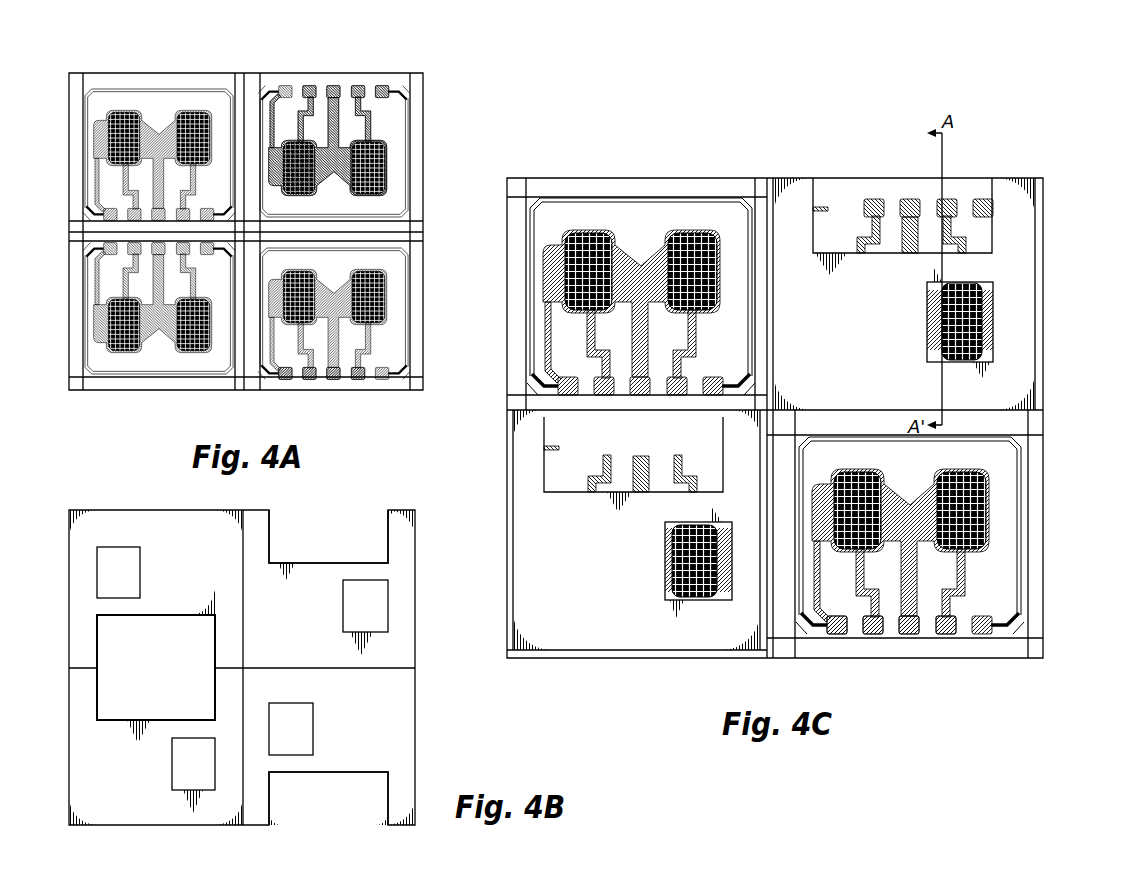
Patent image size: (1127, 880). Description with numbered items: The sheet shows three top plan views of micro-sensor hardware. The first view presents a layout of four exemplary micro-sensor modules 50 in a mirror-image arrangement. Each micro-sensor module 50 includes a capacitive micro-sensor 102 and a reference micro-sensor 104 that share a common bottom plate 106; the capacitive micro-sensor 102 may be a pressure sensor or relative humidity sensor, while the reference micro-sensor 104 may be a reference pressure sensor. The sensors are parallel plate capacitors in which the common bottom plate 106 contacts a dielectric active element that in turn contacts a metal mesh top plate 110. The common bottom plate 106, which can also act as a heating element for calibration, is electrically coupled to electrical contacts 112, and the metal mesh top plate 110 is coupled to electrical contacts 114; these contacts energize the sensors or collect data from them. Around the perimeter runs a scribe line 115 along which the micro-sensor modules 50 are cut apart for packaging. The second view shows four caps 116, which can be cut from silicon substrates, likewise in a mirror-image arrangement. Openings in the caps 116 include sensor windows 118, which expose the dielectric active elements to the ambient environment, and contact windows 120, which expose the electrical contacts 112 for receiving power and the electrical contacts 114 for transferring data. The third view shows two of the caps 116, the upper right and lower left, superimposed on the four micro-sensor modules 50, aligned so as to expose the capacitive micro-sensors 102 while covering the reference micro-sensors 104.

In FIG. 4A, the micro-sensor module 50 is at (150, 60).
In FIG. 4C, the micro-sensor module 50 is at (653, 155).
In FIG. 4A, the capacitive micro-sensor 102 is at (382, 142).
In FIG. 4C, the capacitive micro-sensor 102 is at (971, 286).
In FIG. 4A, the reference micro-sensor 104 is at (302, 185).
In FIG. 4A, the common bottom plate 106 is at (390, 157).
In FIG. 4A, the metal mesh top plate 110 is at (382, 190).
In FIG. 4A, the electrical contacts 112 is at (382, 93).
In FIG. 4C, the electrical contacts 112 is at (982, 200).
In FIG. 4A, the electrical contacts 114 is at (358, 93).
In FIG. 4C, the electrical contacts 114 is at (944, 200).
In FIG. 4A, the scribe line 115 is at (414, 283).
In FIG. 4B, the cap 116 is at (200, 568).
In FIG. 4C, the cap 116 is at (867, 356).
In FIG. 4B, the sensor window 118 is at (130, 583).
In FIG. 4B, the contact window 120 is at (166, 639).